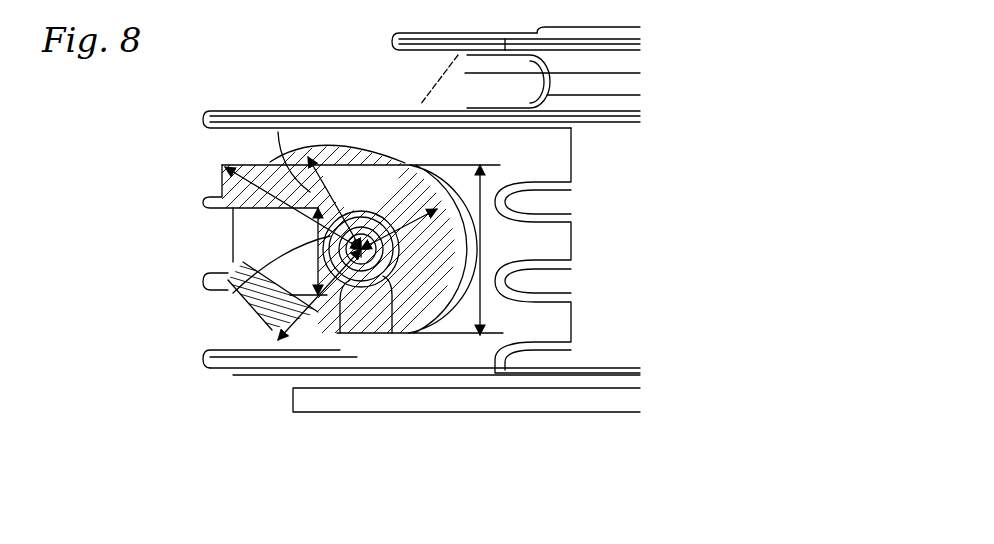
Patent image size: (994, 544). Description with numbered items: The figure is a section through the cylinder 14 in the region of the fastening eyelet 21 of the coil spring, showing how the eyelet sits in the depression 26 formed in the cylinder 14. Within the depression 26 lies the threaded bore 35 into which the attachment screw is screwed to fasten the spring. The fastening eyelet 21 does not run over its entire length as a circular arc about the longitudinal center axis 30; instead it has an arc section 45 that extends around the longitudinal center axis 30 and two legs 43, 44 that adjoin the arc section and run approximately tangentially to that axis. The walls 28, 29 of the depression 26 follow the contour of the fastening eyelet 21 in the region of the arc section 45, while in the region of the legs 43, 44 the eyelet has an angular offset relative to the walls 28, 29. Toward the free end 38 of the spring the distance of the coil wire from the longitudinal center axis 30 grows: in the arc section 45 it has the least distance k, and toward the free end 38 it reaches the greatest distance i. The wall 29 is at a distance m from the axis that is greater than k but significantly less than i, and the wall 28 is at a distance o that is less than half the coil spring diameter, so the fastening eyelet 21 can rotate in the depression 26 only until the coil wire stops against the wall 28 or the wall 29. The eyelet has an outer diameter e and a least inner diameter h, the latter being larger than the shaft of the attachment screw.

The cylinder 14 is at (623, 98).
The fastening eyelet 21 is at (413, 300).
The depression 26 is at (257, 243).
The wall 28 is at (323, 155).
The wall 29 is at (292, 347).
The longitudinal center axis 30 is at (392, 310).
The threaded bore 35 is at (330, 302).
The free end 38 is at (222, 170).
The leg 43 is at (352, 187).
The leg 44 is at (324, 318).
The arc section 45 is at (408, 197).
The outer diameter e is at (480, 247).
The least inner diameter h is at (233, 293).
The greatest distance i is at (260, 167).
The least distance k is at (413, 225).
The distance m is at (310, 322).
The distance o is at (310, 197).